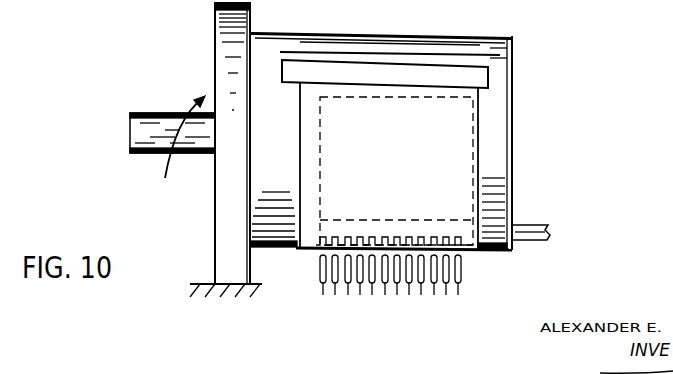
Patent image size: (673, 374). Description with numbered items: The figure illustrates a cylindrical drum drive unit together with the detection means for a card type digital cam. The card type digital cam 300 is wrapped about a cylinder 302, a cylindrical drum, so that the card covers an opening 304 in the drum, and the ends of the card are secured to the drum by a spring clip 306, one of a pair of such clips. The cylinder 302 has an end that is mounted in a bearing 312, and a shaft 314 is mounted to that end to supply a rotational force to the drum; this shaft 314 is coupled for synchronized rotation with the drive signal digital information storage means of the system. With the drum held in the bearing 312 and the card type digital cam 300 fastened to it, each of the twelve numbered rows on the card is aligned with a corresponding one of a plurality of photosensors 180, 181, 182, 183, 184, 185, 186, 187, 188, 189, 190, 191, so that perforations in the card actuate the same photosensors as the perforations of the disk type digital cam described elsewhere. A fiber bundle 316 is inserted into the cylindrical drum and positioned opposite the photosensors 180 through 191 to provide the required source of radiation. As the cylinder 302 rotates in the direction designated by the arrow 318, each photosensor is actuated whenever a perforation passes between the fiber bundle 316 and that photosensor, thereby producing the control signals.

The photosensor 180 is at (323, 295).
The photosensor 181 is at (335, 295).
The photosensor 182 is at (348, 295).
The photosensor 183 is at (360, 295).
The photosensor 184 is at (372, 295).
The photosensor 185 is at (385, 295).
The photosensor 186 is at (397, 295).
The photosensor 187 is at (409, 295).
The photosensor 188 is at (421, 295).
The photosensor 189 is at (434, 295).
The photosensor 190 is at (446, 295).
The photosensor 191 is at (458, 295).
The card type digital cam 300 is at (300, 159).
The cylinder 302 is at (513, 81).
The opening 304 is at (470, 169).
The spring clip 306 is at (466, 70).
The bearing 312 is at (226, 20).
The shaft 314 is at (149, 122).
The fiber bundle 316 is at (386, 222).
The arrow 318 is at (175, 149).